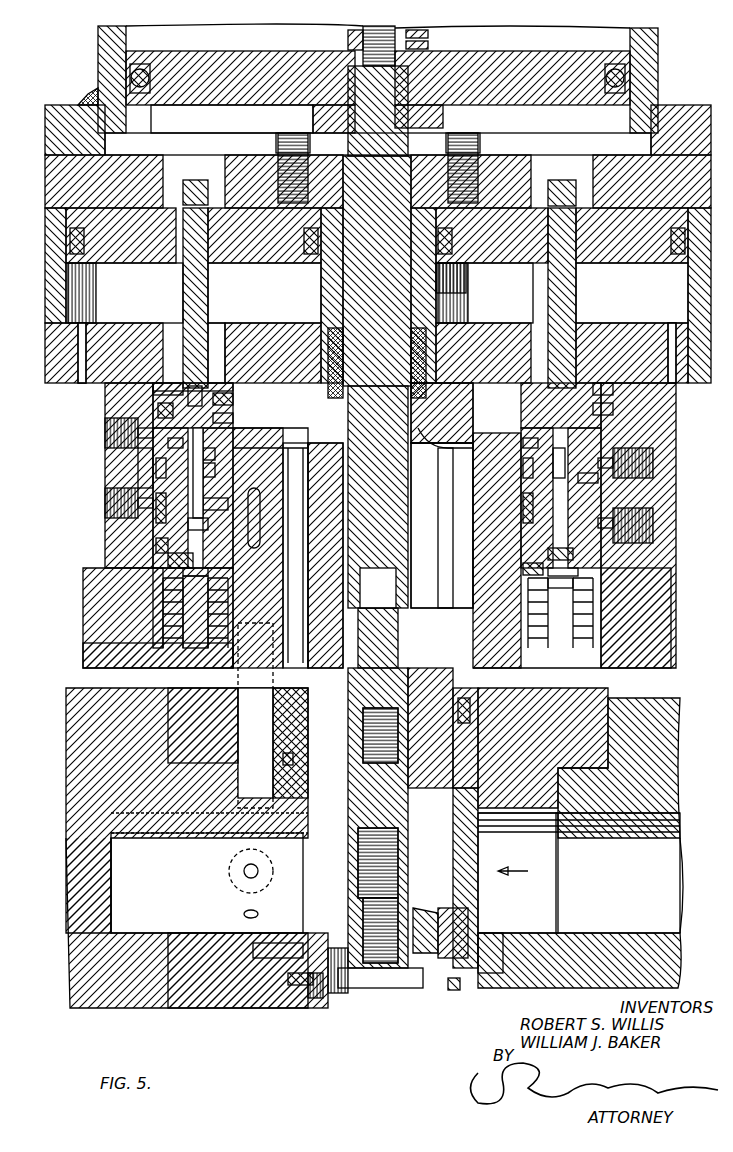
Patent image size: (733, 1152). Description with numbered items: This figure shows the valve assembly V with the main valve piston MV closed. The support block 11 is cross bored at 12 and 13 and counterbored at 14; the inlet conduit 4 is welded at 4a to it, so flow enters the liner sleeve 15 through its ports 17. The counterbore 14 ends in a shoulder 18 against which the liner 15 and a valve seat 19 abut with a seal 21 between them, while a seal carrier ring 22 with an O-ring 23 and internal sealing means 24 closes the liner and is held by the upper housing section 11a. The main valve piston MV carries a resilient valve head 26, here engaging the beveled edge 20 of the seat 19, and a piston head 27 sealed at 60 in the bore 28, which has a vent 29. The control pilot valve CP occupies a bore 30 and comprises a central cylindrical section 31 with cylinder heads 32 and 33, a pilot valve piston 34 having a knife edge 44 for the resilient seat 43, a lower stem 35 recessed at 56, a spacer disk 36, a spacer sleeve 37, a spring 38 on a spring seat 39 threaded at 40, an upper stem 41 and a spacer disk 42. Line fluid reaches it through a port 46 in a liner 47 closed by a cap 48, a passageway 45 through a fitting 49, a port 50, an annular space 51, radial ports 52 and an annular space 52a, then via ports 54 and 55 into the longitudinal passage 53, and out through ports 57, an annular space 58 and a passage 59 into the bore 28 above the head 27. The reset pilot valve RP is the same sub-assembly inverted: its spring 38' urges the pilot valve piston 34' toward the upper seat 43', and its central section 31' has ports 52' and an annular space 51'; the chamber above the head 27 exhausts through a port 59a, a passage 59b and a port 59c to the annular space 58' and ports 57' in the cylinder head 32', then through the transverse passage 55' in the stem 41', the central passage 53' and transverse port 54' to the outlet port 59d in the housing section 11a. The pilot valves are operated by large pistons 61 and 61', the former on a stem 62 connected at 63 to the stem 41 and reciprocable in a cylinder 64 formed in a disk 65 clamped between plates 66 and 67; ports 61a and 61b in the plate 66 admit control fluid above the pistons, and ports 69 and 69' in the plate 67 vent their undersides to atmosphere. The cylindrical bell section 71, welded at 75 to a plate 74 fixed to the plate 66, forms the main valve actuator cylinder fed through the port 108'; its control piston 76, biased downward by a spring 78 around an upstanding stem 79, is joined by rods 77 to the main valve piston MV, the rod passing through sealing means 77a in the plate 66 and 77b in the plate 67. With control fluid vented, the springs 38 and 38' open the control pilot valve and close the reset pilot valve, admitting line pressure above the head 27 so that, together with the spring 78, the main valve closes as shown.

The cylinder housing 4 is at (650, 843).
The housing wall 4a is at (595, 690).
The base block 11 is at (200, 990).
The valve body 11a is at (668, 580).
The bore 12 is at (550, 820).
The lower seal ring 13 is at (310, 990).
The cylinder wall 14 is at (465, 785).
The bottom block 15 is at (460, 930).
The sleeve 17 is at (470, 820).
The seal retainer 18 is at (445, 955).
The lower plate 19 is at (295, 957).
The packing 20 is at (425, 950).
The gasket 21 is at (285, 975).
The guide block 22 is at (445, 733).
The side block 23 is at (285, 745).
The seal 24 is at (450, 712).
The nut 26 is at (335, 990).
The stem guide 27 is at (430, 728).
The passage 28 is at (285, 470).
The housing section 29 is at (580, 690).
The spring seat 30 is at (148, 613).
The inlet fitting 31 is at (114, 441).
The inlet fitting 31' is at (482, 470).
The valve cap 32 is at (174, 385).
The valve cap 32' is at (596, 566).
The seal ring 33 is at (140, 545).
The valve seat 34 is at (140, 470).
The valve seat 34' is at (484, 508).
The retainer 35 is at (185, 565).
The washer 36 is at (175, 552).
The bottom plate 37 is at (150, 633).
The spring housing 38 is at (198, 625).
The spring housing 38' is at (599, 618).
The spring 39 is at (155, 590).
The spring 40 is at (190, 575).
The stem end 41 is at (221, 373).
The stem end 41' is at (596, 582).
The collar 42 is at (160, 375).
The port 43 is at (110, 481).
The port 43' is at (615, 419).
The vent fitting 44 is at (110, 490).
The valve stem 45 is at (252, 520).
The cam 46 is at (240, 835).
The chamber 47 is at (185, 820).
The housing block 48 is at (60, 713).
The block 49 is at (235, 660).
The plunger 50 is at (255, 492).
The valve disc 51 is at (237, 486).
The valve disc 51' is at (635, 477).
The seat ring 52 is at (235, 462).
The seat ring 52' is at (619, 438).
The seat face 52a is at (212, 445).
The valve head 53 is at (154, 449).
The valve head 53' is at (485, 454).
The sleeve 54 is at (137, 512).
The sleeve 54' is at (612, 394).
The seal 55 is at (143, 404).
The seal 55' is at (511, 570).
The guide 56 is at (200, 535).
The seal 57 is at (235, 390).
The seal 57' is at (529, 550).
The ring 58 is at (236, 409).
The fitting 58' is at (645, 525).
The passage 59 is at (262, 422).
The passage 59a is at (470, 420).
The passage 59b is at (480, 492).
The passage 59c is at (510, 505).
The fitting 59d is at (648, 452).
The sleeve 60 is at (290, 640).
The cavity 61 is at (264, 293).
The cavity 61' is at (632, 293).
The gap 61a is at (160, 160).
The gap 61b is at (528, 160).
The piston rod 62 is at (175, 278).
The bore 63 is at (208, 350).
The bellows 64 is at (60, 297).
The upper housing 65 is at (40, 250).
The plate 66 is at (45, 168).
The lower housing 67 is at (42, 348).
The slot 69 is at (66, 366).
The slot 69' is at (659, 339).
The cap 71 is at (650, 37).
The flange 74 is at (40, 100).
The joint 75 is at (82, 84).
The cap body 76 is at (567, 90).
The bellows 77 is at (395, 272).
The shaft upper 77a is at (377, 347).
The shaft lower 77b is at (377, 361).
The lock ring 78 is at (420, 28).
The lock ring 79 is at (342, 40).
The recess 108' is at (232, 118).
The main valve MV is at (380, 828).
The valve V is at (72, 469).
The control port CP is at (145, 532).
The return port RP is at (600, 483).